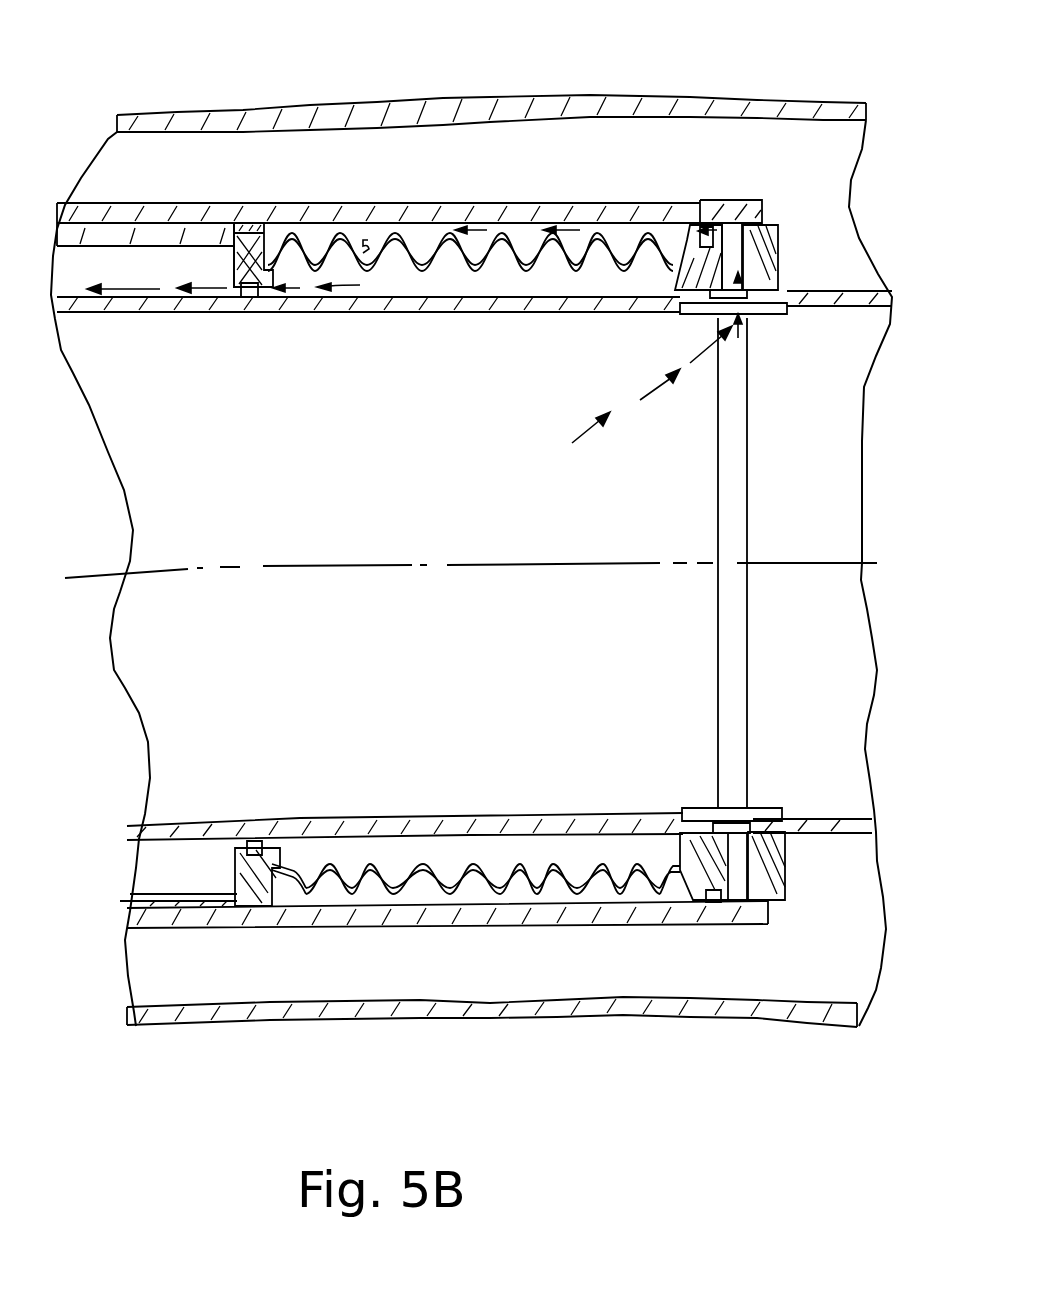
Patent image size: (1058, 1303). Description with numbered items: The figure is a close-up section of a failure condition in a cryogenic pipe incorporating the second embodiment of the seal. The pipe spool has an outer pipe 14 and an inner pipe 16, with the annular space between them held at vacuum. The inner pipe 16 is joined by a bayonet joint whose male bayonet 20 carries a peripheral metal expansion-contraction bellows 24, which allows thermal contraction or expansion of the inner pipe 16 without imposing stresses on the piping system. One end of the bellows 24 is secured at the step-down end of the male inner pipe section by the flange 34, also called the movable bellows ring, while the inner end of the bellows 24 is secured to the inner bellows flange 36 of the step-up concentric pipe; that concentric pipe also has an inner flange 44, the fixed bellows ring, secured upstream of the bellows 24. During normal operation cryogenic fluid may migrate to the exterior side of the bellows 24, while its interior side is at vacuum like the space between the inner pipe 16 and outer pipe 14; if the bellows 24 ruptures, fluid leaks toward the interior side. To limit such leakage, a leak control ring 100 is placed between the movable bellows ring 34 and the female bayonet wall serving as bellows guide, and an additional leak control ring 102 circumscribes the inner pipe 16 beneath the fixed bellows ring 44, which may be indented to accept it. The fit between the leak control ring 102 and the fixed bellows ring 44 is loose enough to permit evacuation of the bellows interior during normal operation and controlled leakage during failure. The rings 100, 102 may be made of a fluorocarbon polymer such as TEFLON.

The outer pipe 14 is at (297, 107).
The inner pipe 16 is at (162, 826).
The male bayonet 20 is at (195, 190).
The expansion-contraction bellows 24 is at (498, 222).
The flange 34 is at (690, 278).
The inner bellows flange 36 is at (250, 226).
The inner flange 44 is at (228, 268).
The leak control ring 100 is at (694, 222).
The leak control ring 102 is at (252, 300).